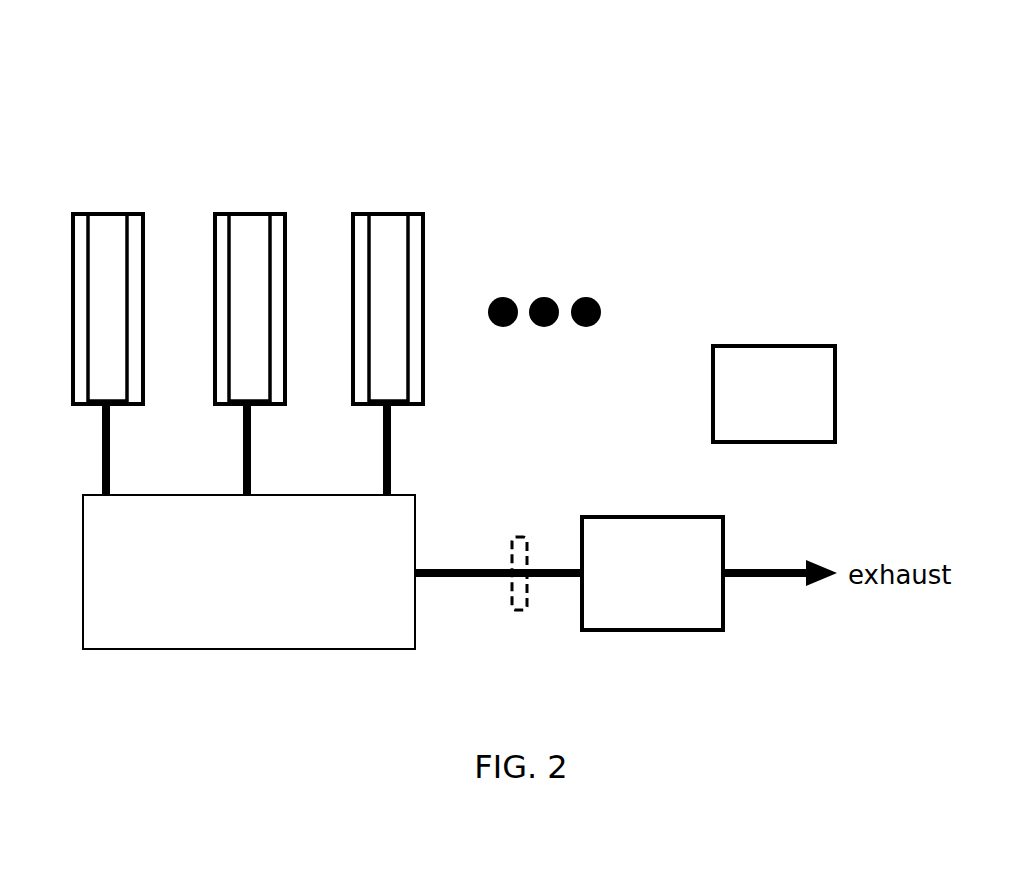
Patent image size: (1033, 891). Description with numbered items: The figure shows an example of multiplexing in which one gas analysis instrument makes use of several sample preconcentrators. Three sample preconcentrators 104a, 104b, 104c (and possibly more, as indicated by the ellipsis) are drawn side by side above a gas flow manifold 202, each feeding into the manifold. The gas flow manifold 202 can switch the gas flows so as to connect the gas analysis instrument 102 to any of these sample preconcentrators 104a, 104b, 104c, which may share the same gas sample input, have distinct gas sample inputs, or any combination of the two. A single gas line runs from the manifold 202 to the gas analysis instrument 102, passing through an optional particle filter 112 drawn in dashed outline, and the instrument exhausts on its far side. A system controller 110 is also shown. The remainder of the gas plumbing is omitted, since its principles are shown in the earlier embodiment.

The sample preconcentrator 104a is at (80, 168).
The sample preconcentrator 104b is at (237, 168).
The sample preconcentrator 104c is at (379, 168).
The gas flow manifold 202 is at (249, 572).
The gas analysis instrument 102 is at (652, 573).
The system controller 110 is at (774, 394).
The particle filter 112 is at (517, 612).